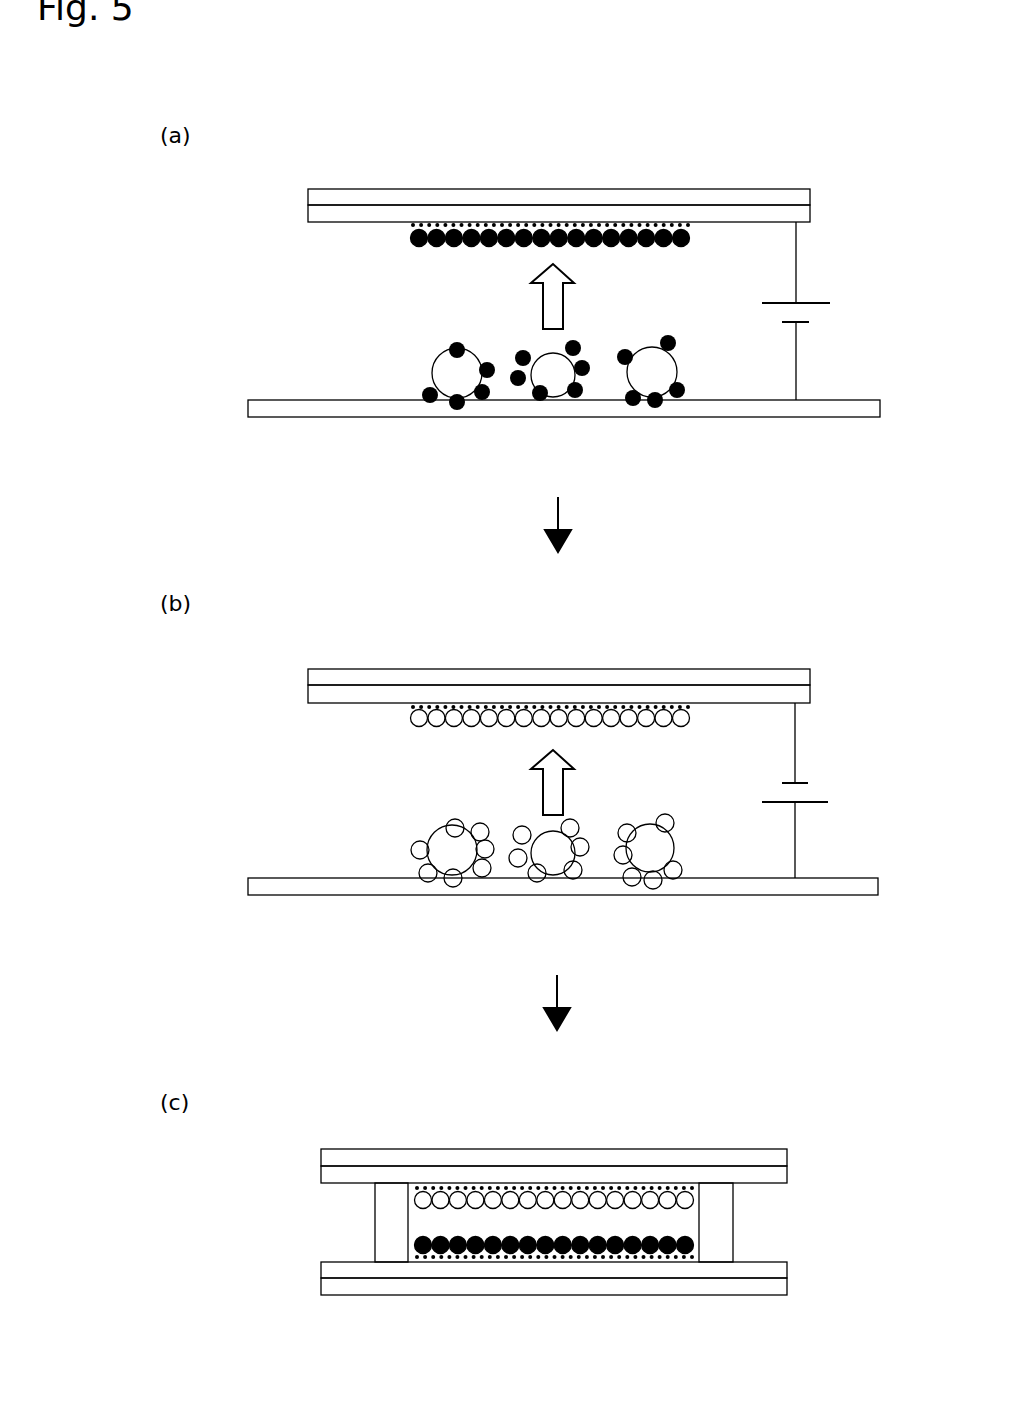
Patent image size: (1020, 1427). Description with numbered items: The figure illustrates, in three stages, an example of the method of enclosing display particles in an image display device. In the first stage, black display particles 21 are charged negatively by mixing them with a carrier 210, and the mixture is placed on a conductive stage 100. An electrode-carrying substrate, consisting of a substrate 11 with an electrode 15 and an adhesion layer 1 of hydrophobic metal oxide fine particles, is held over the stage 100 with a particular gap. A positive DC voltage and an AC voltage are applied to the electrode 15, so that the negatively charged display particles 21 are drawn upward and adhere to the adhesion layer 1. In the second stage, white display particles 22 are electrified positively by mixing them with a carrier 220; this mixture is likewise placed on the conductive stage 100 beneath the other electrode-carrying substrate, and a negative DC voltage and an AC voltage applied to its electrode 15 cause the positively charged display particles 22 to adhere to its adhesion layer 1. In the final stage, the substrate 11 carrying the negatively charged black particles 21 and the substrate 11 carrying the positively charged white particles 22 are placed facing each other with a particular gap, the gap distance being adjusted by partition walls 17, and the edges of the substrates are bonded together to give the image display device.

The adhesion layer 1 is at (690, 226).
The substrate 11 is at (308, 196).
The electrode 15 is at (308, 212).
The partition wall 17 is at (717, 1222).
The black display particles 21 is at (411, 239).
The carrier 210 is at (446, 372).
The white display particles 22 is at (410, 718).
The carrier 220 is at (446, 845).
The conductive stage 100 is at (743, 408).